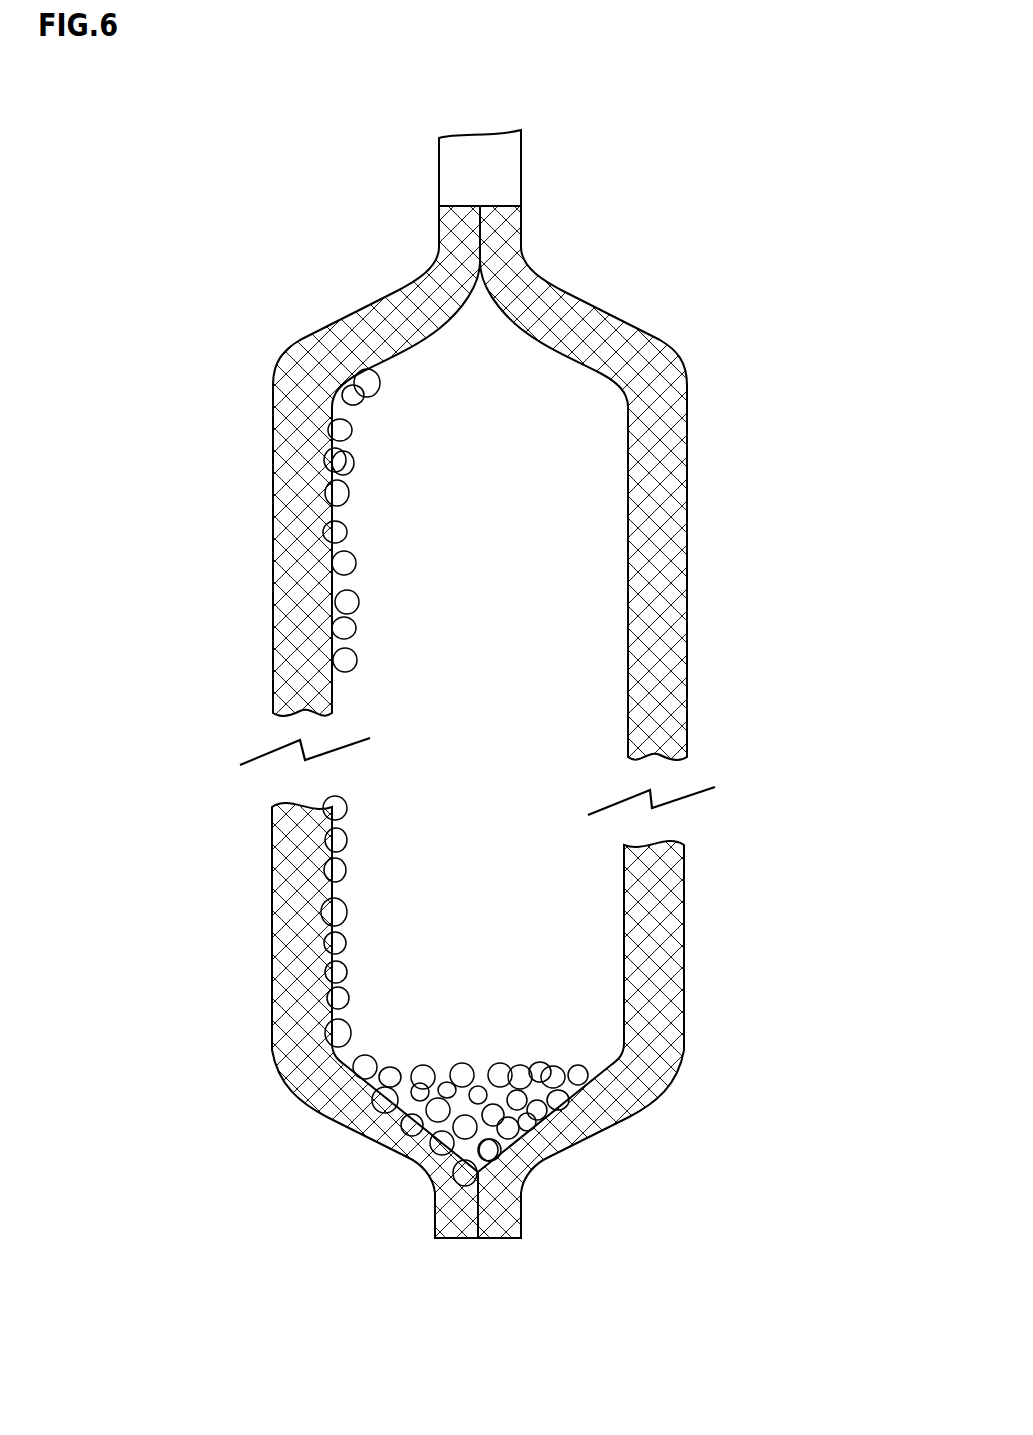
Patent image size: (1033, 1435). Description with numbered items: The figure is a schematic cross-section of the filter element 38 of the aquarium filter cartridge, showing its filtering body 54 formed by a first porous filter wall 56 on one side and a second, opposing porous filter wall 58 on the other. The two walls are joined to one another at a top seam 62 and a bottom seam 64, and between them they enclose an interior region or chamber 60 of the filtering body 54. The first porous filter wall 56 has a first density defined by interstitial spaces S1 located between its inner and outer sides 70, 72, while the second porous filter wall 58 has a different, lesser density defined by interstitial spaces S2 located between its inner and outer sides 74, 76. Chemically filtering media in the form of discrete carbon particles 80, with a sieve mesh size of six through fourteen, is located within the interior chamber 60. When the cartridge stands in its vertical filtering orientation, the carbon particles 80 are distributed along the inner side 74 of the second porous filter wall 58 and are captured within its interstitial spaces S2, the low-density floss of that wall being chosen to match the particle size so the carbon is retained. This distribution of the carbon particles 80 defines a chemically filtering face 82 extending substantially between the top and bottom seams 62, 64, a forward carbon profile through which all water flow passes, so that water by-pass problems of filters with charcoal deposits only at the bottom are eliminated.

The filter element 38 is at (290, 318).
The filtering body 54 is at (670, 317).
The first porous filter wall 56 is at (687, 627).
The second porous filter wall 58 is at (272, 602).
The interior chamber 60 is at (509, 566).
The top seam 62 is at (480, 207).
The bottom seam 64 is at (477, 1238).
The inner side of first porous filter wall 70 is at (625, 910).
The outer side of first porous filter wall 72 is at (685, 888).
The inner side of second porous filter wall 74 is at (333, 513).
The outer side of second porous filter wall 76 is at (272, 526).
The chemically filtering media particles 80 is at (346, 630).
The chemically filtering face 82 is at (412, 814).
The interstitial spaces of first porous filter wall S1 is at (635, 722).
The interstitial spaces of second porous filter wall S2 is at (330, 722).